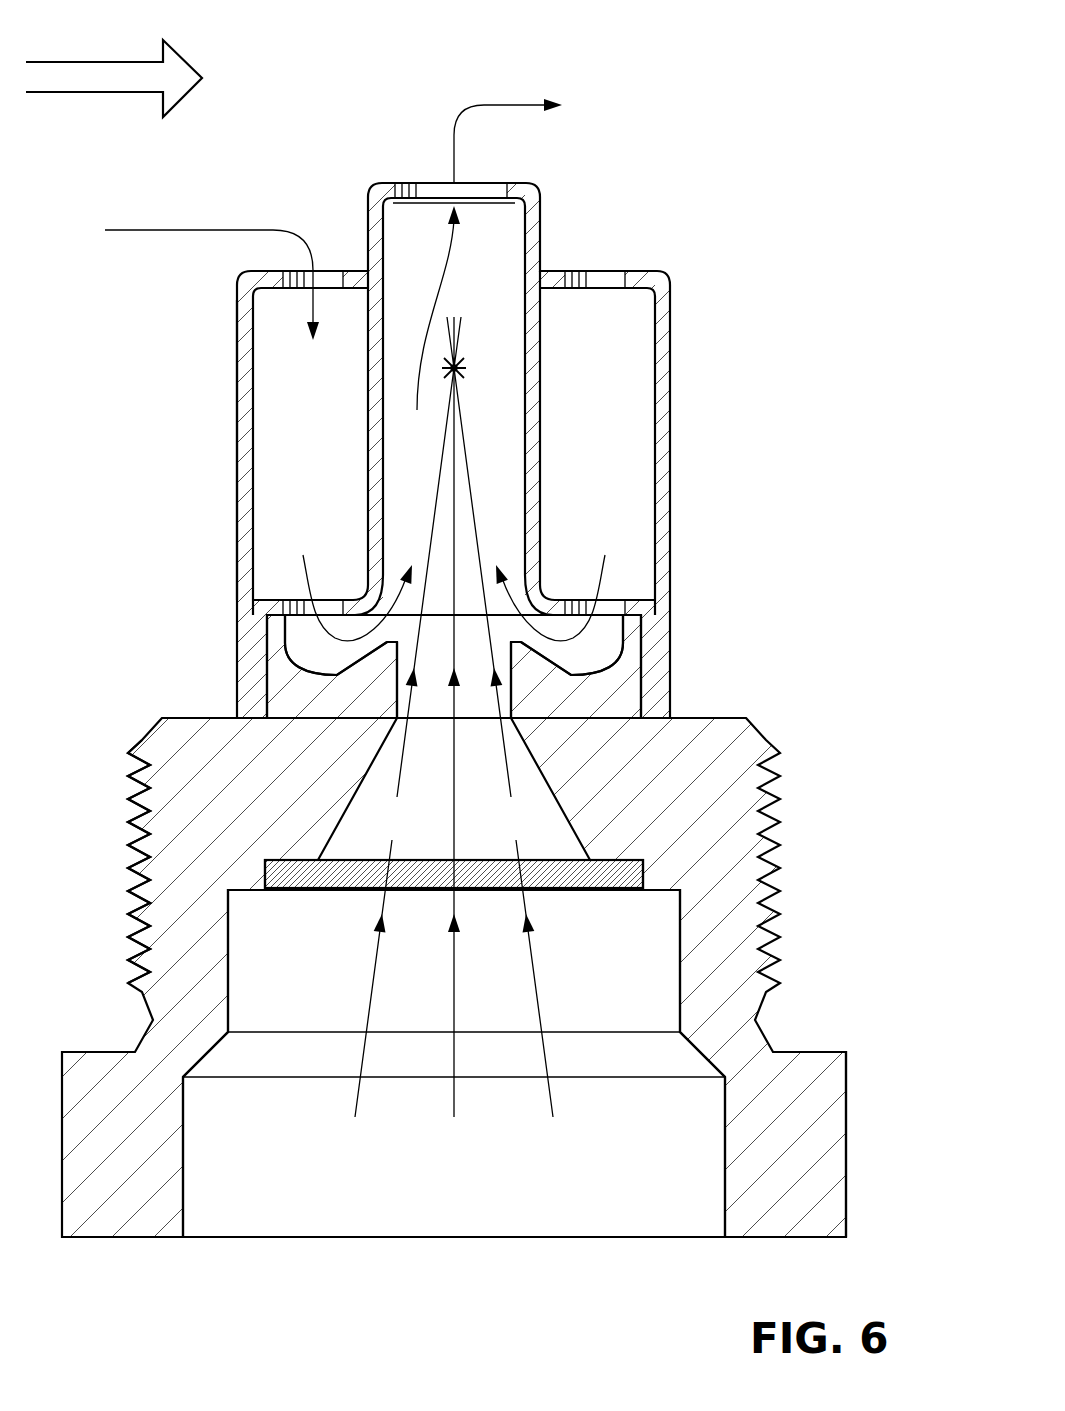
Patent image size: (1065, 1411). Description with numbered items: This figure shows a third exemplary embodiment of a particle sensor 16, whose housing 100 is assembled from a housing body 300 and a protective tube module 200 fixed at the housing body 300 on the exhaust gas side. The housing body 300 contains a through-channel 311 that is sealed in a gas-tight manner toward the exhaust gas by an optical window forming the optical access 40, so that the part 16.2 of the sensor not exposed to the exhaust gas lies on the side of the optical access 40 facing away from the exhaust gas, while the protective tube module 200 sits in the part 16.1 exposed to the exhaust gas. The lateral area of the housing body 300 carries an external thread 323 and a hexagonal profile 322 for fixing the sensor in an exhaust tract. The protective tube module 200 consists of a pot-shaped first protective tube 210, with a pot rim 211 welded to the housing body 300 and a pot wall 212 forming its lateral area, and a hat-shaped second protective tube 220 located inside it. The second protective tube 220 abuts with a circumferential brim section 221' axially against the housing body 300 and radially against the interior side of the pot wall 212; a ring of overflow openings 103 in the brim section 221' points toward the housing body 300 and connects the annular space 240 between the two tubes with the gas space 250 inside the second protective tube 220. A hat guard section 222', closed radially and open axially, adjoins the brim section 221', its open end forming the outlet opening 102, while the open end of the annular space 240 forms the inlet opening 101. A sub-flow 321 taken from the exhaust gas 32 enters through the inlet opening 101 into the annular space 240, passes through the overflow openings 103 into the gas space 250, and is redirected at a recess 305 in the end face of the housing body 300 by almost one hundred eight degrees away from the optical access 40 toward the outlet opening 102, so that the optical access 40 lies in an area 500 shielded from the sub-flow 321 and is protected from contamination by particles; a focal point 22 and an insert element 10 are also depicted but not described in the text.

The exhaust gas 32 is at (68, 62).
The sub-flow 321 is at (105, 230).
The outlet opening 102 is at (430, 186).
The inlet opening 101 is at (327, 272).
The focal point of jet 22 is at (464, 366).
The protective tube module 200 is at (185, 385).
The first protective tube 210 is at (688, 344).
The second protective tube 220 is at (558, 404).
The particle sensor 16 is at (840, 445).
The annular space 240 is at (318, 476).
The gas space 250 is at (436, 476).
The hat guard section 222' is at (564, 542).
The pot wall 212 is at (240, 501).
The housing 100 is at (830, 575).
The overflow openings 103 is at (307, 605).
The brim section 221' is at (398, 595).
The recess 305 is at (292, 640).
The pot rim 211 is at (246, 707).
The external thread 323 is at (127, 838).
The housing body 300 is at (835, 855).
The part of particle sensor exposed to the exhaust gas 16.1 is at (480, 763).
The through-channel 311 is at (408, 836).
The area shielded from sub-flow 500 is at (540, 836).
The optical access 40 is at (566, 880).
The nozzle insert 10 is at (540, 1012).
The hexagonal profile 322 is at (846, 1140).
The part of particle sensor not exposed to the exhaust gas 16.2 is at (480, 1208).